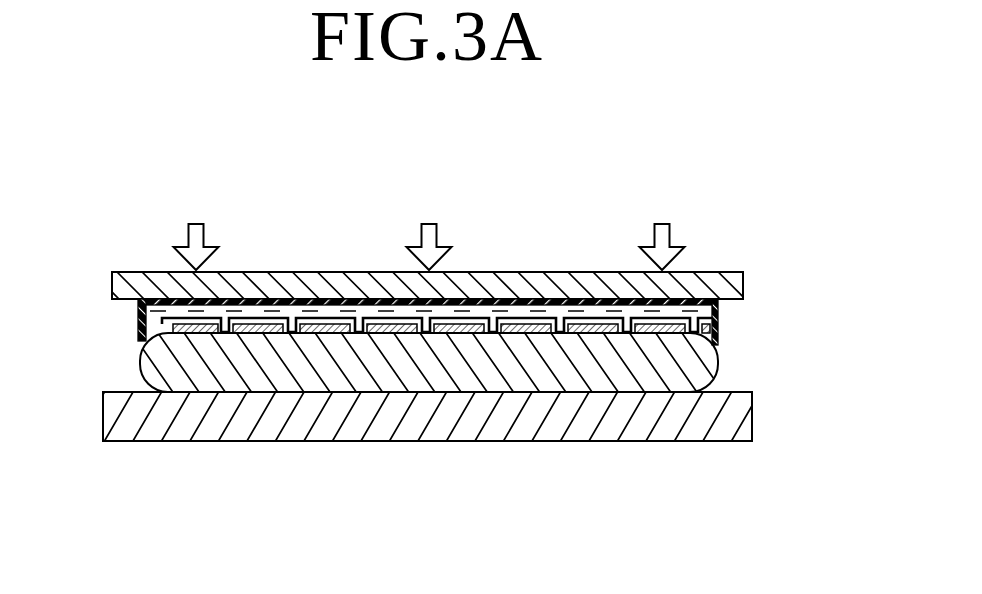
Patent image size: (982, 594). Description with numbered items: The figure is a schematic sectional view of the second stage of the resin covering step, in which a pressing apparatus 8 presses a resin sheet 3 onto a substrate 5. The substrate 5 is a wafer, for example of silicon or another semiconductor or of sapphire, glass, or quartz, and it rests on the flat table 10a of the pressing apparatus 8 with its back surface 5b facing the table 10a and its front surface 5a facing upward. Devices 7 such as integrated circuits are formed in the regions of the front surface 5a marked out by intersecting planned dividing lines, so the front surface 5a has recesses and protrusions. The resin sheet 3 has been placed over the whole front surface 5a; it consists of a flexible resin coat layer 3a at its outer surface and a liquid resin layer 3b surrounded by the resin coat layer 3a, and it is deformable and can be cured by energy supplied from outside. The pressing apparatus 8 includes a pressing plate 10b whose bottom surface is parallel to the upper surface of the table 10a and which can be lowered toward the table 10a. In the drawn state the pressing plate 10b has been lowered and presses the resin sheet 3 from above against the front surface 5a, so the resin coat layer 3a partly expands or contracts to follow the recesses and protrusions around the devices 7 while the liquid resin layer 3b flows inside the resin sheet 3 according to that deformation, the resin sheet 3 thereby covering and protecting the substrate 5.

The pressing apparatus 8 is at (112, 200).
The pressing plate 10b is at (705, 272).
The table 10a is at (150, 447).
The substrate 5 is at (718, 377).
The front surface 5a is at (228, 328).
The back surface 5b is at (200, 392).
The resin sheet 3 is at (725, 322).
The resin coat layer 3a is at (558, 302).
The liquid resin layer 3b is at (492, 323).
The device 7 is at (163, 327).